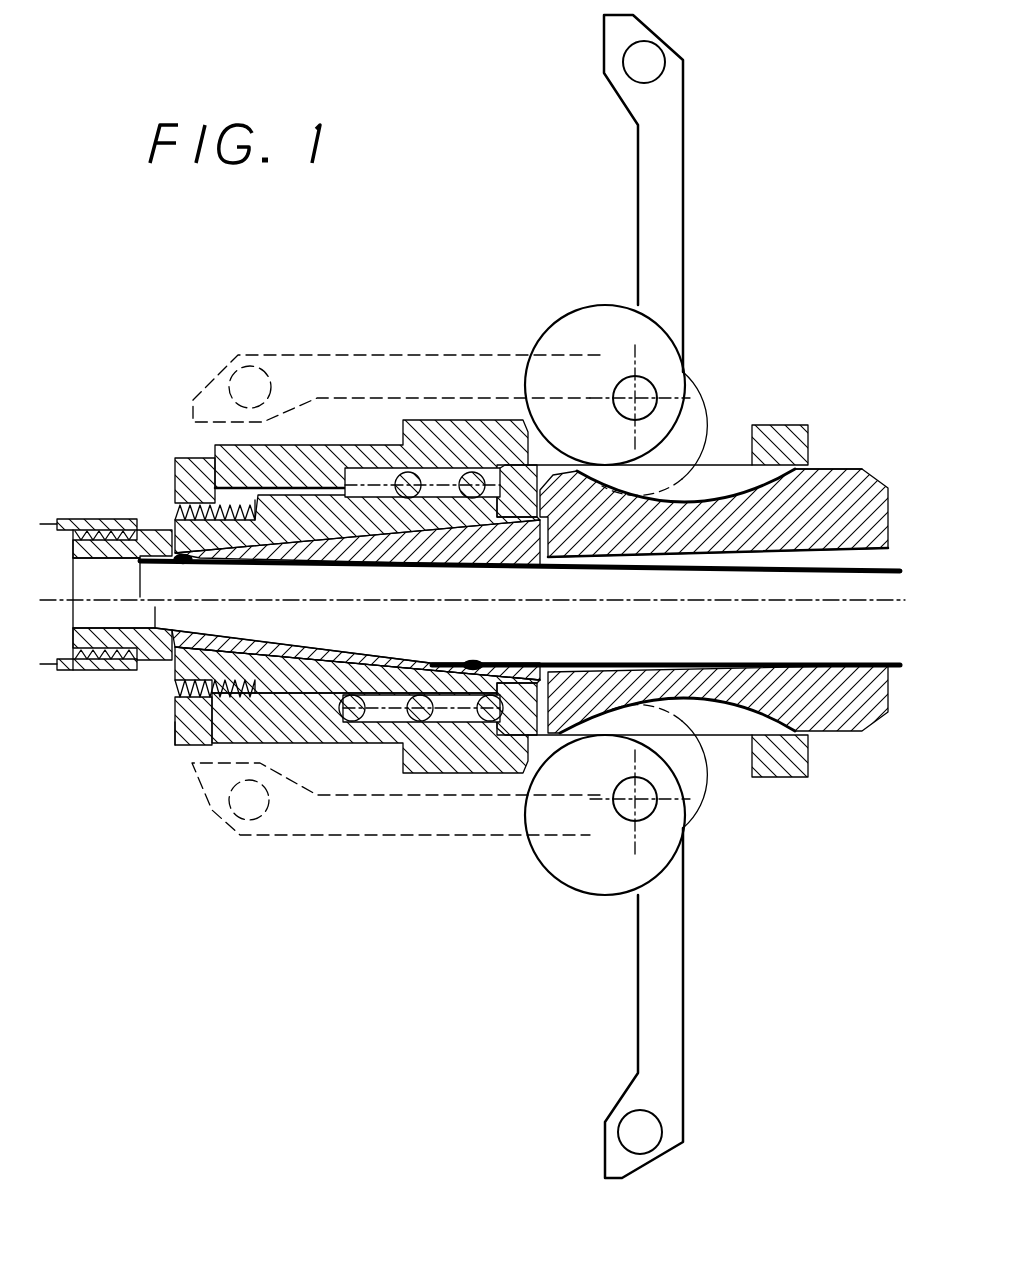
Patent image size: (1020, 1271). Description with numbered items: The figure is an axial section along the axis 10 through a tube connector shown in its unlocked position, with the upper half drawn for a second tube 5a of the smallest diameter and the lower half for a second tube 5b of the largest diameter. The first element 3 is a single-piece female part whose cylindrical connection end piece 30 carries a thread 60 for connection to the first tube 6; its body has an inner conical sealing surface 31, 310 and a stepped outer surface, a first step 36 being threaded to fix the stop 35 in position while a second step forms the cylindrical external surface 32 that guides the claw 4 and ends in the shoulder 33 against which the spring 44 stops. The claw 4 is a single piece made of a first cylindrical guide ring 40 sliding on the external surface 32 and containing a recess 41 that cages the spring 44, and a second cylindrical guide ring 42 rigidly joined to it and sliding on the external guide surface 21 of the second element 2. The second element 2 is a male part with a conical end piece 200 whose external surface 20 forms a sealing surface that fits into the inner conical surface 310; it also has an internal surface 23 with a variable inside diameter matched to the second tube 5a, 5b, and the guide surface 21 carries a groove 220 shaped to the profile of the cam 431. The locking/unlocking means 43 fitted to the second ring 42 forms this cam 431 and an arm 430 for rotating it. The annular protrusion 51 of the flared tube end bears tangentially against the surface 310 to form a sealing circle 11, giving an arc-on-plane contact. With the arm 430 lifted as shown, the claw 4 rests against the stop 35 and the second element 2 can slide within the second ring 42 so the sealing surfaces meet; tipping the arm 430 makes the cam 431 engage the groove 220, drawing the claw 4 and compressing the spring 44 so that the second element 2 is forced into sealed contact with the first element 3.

The second element 2 is at (838, 490).
The external guide surface 21 is at (823, 467).
The internal surface 23 is at (803, 549).
The first element 3 is at (212, 742).
The cylindrical connection end piece 30 is at (66, 519).
The conical sealing surface 31 is at (297, 618).
The inner conical surface 310 is at (368, 655).
The cylindrical external surface 32 is at (368, 690).
The shoulder 33 is at (512, 712).
The stop 35 is at (173, 688).
The first step 36 is at (173, 724).
The claw 4 is at (458, 774).
The first cylindrical guide ring 40 is at (213, 445).
The recess 41 is at (448, 724).
The second cylindrical guide ring 42 is at (770, 425).
The locking/unlocking means 43 is at (553, 320).
The arm 430 is at (362, 363).
The cam 431 is at (705, 407).
The spring 44 is at (395, 722).
The second tube 5a is at (661, 575).
The second tube 5b is at (752, 665).
The annular protrusion 51 is at (190, 565).
The first tube 6 is at (96, 520).
The thread 60 is at (118, 562).
The axis 10 is at (117, 590).
The sealing circle 11 is at (176, 522).
The sealing element 20 is at (372, 562).
The conical end piece 200 is at (389, 566).
The groove 220 is at (745, 737).